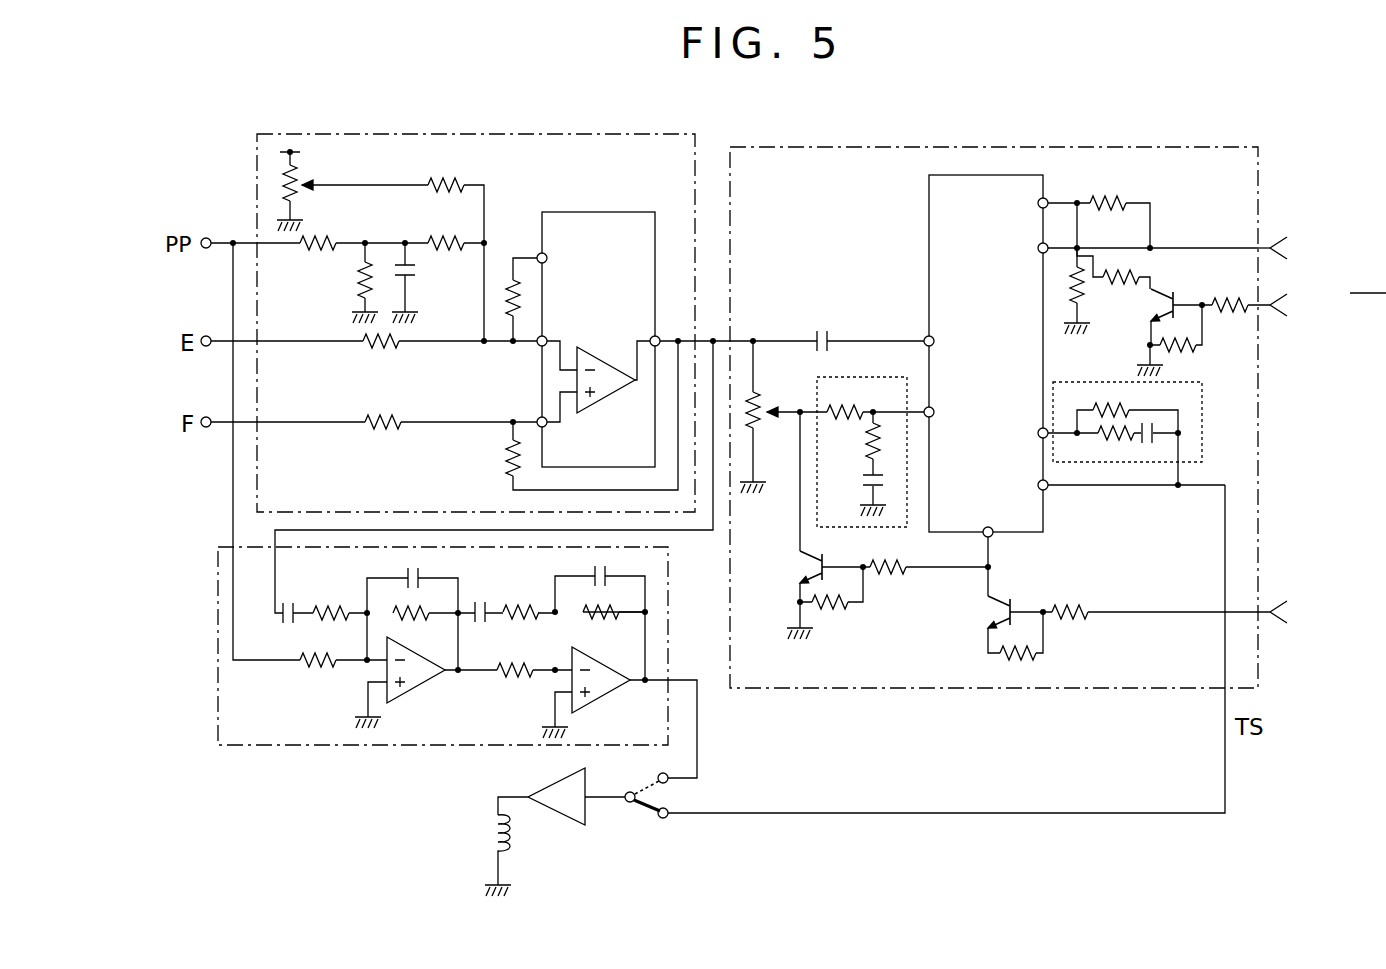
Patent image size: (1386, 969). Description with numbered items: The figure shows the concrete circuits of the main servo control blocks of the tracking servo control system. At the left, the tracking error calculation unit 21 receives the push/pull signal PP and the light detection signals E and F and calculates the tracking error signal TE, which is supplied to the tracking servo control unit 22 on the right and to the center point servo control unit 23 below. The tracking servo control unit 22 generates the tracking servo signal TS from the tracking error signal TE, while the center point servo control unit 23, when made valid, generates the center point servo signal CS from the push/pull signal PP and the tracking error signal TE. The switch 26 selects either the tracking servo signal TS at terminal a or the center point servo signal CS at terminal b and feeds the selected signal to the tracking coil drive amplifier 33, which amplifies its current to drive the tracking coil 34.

The tracking error calculation unit 21 is at (256, 158).
The tracking servo control unit 22 is at (783, 690).
The center point servo control unit 23 is at (283, 748).
The switch 26 is at (648, 808).
The tracking coil drive amplifier 33 is at (566, 815).
The tracking coil 34 is at (488, 832).